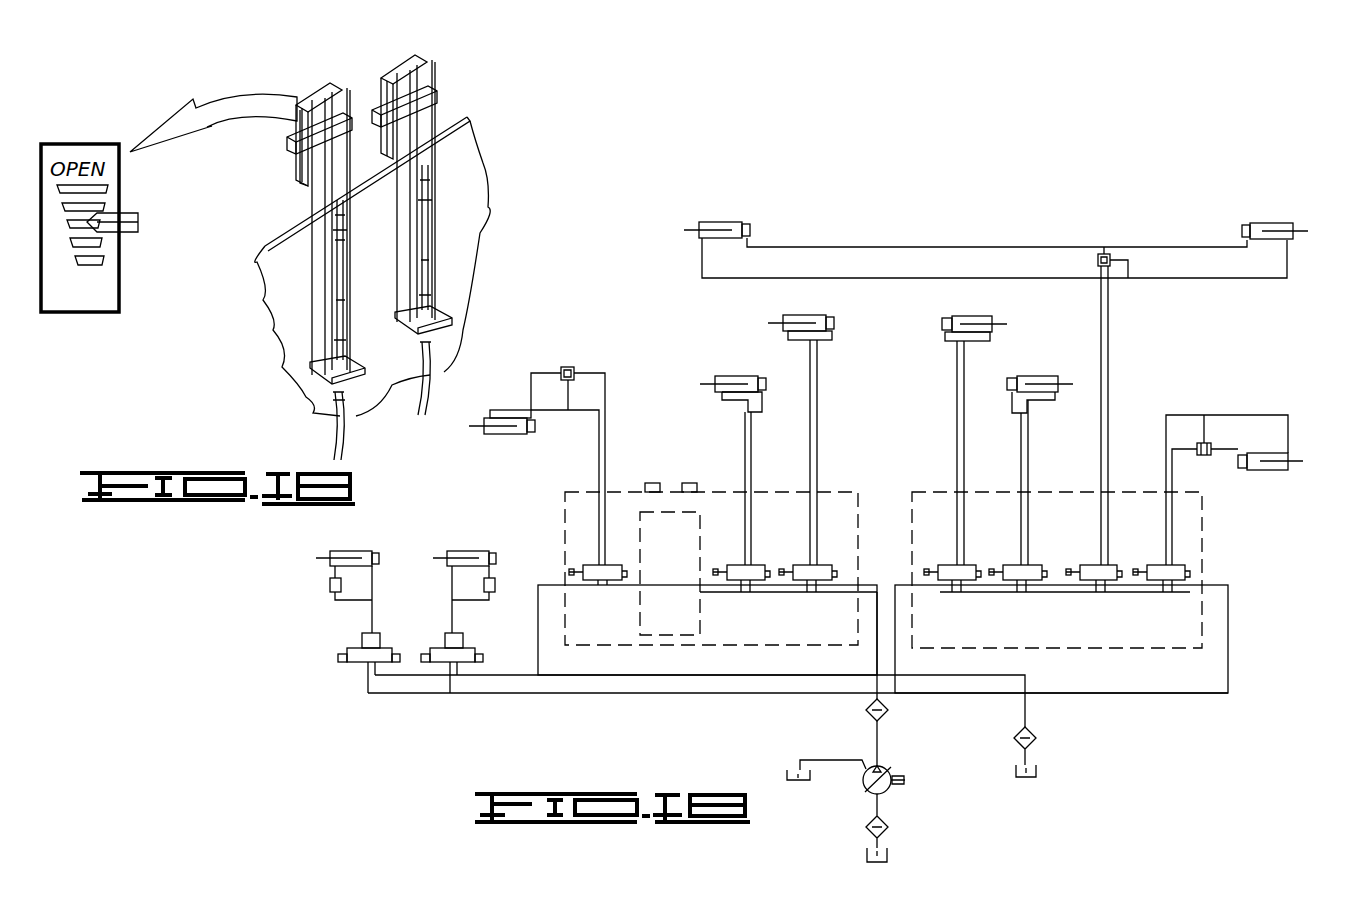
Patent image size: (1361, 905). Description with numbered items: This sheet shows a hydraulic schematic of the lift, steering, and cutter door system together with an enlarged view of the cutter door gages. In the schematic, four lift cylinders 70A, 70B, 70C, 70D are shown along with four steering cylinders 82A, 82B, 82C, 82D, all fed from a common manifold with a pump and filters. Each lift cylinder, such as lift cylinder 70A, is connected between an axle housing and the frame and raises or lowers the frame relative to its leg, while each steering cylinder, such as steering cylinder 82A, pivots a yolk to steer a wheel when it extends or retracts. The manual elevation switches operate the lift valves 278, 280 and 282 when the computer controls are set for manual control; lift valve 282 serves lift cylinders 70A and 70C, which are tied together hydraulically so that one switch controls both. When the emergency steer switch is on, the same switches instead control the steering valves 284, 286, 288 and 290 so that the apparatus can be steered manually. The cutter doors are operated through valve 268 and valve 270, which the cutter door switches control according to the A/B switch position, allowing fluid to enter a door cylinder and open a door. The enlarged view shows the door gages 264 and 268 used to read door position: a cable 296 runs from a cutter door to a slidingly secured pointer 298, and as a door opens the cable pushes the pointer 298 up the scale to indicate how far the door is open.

In FIG. 18, the door gage 264 is at (312, 82).
In FIG. 18, the valve 268 is at (445, 58).
In FIG. 16, the valve 268 is at (355, 664).
In FIG. 16, the valve 270 is at (440, 664).
In FIG. 16, the lift valve 278 is at (590, 582).
In FIG. 16, the lift valve 280 is at (1175, 582).
In FIG. 16, the lift valve 282 is at (1088, 582).
In FIG. 16, the steering valve 284 is at (735, 582).
In FIG. 16, the steering valve 286 is at (818, 582).
In FIG. 16, the steering valve 288 is at (945, 582).
In FIG. 16, the steering valve 290 is at (1010, 582).
In FIG. 18, the cable 296 is at (334, 433).
In FIG. 18, the pointer 298 is at (300, 135).
In FIG. 16, the lift cylinder 70A is at (705, 222).
In FIG. 16, the lift cylinder 70B is at (490, 435).
In FIG. 16, the lift cylinder 70C is at (1258, 222).
In FIG. 16, the lift cylinder 70D is at (1288, 472).
In FIG. 16, the steering cylinder 82A is at (787, 316).
In FIG. 16, the steering cylinder 82B is at (722, 377).
In FIG. 16, the steering cylinder 82C is at (985, 316).
In FIG. 16, the steering cylinder 82D is at (1020, 377).